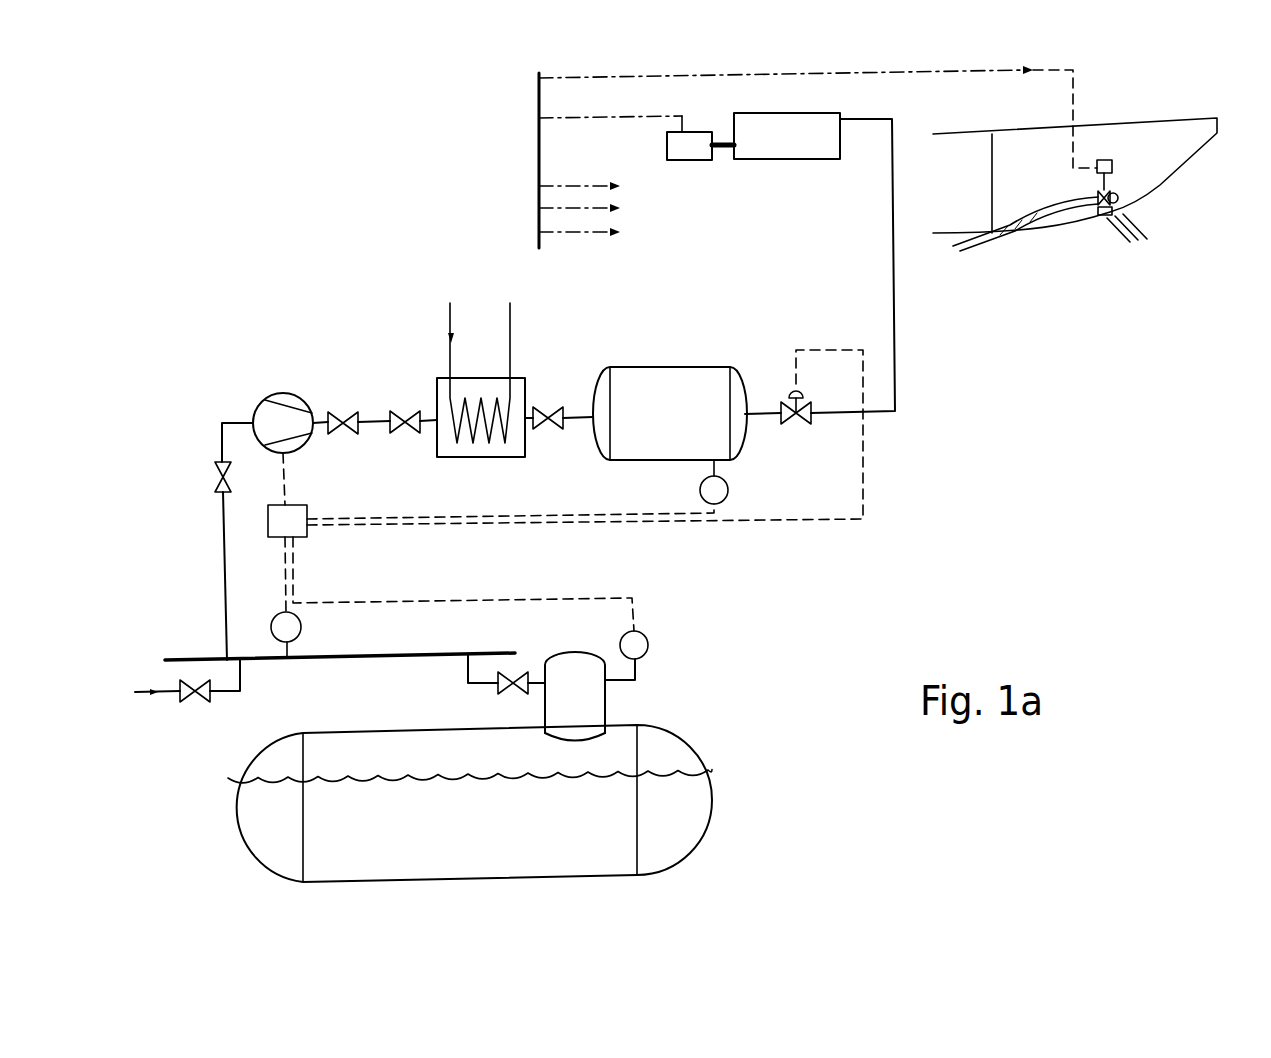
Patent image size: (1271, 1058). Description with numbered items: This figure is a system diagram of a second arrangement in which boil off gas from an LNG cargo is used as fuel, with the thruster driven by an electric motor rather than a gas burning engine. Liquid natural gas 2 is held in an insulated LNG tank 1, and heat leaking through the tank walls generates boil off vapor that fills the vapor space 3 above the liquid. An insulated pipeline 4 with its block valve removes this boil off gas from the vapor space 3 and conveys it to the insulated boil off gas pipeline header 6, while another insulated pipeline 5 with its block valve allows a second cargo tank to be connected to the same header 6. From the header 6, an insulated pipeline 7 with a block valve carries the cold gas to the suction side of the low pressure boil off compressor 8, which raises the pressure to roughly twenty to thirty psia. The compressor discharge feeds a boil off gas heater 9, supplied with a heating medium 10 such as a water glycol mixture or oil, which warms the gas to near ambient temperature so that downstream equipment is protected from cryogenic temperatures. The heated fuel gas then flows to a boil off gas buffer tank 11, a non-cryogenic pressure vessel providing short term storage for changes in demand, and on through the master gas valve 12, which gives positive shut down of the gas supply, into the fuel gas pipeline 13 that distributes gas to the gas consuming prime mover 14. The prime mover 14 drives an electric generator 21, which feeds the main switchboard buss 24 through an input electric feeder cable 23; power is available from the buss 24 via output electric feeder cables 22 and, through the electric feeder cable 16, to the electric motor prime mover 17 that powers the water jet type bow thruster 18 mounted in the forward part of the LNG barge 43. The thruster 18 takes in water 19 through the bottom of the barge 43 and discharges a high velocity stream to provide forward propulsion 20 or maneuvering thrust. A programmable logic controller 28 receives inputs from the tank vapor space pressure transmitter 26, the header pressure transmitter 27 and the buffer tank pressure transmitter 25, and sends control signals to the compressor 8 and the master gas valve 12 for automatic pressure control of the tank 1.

The LNG tank 1 is at (228, 793).
The liquid natural gas 2 is at (255, 822).
The vapor space 3 is at (268, 757).
The insulated pipeline 4 is at (482, 688).
The insulated pipeline 5 is at (237, 695).
The boil off gas pipeline header 6 is at (375, 652).
The insulated pipeline 7 is at (222, 445).
The low pressure boil off compressor 8 is at (287, 400).
The boil off gas heater 9 is at (433, 388).
The heating medium 10 is at (450, 333).
The boil off gas buffer tank 11 is at (638, 367).
The master gas valve 12 is at (802, 422).
The fuel gas pipeline 13 is at (897, 296).
The gas consuming prime mover 14 is at (775, 160).
The electric feeder cable 16 is at (1042, 71).
The electric motor prime mover 17 is at (1105, 158).
The water jet type bow thruster 18 is at (1120, 200).
The water 19 is at (1148, 240).
The forward propulsion 20 is at (993, 253).
The electric generator 21 is at (693, 160).
The output electric feeder cables 22 is at (622, 187).
The input electric feeder cable 23 is at (633, 122).
The main switchboard buss 24 is at (539, 165).
The fuel gas buffer tank pressure transmitter 25 is at (735, 487).
The LNG cargo tank vapor space pressure transmitter 26 is at (660, 640).
The boil off gas pipeline header pressure transmitter 27 is at (272, 615).
The programmable logic controller 28 is at (308, 503).
The LNG barge 43 is at (1155, 143).